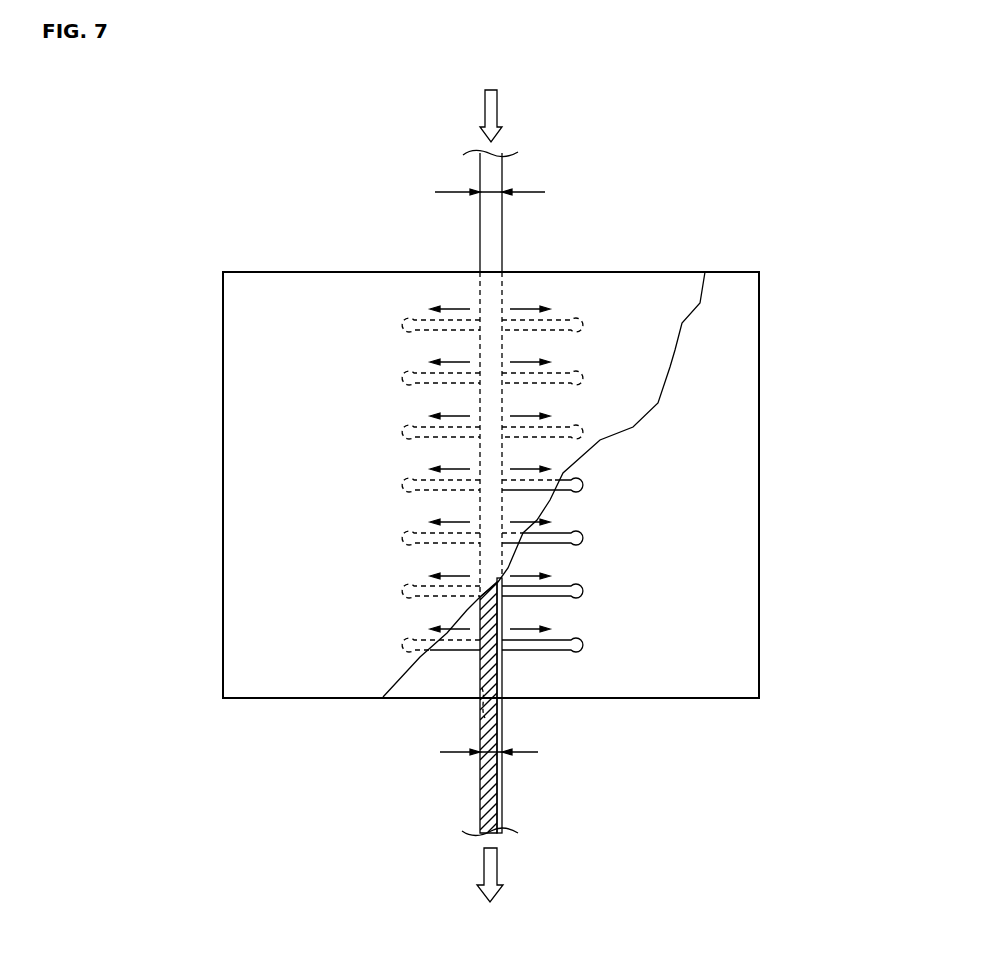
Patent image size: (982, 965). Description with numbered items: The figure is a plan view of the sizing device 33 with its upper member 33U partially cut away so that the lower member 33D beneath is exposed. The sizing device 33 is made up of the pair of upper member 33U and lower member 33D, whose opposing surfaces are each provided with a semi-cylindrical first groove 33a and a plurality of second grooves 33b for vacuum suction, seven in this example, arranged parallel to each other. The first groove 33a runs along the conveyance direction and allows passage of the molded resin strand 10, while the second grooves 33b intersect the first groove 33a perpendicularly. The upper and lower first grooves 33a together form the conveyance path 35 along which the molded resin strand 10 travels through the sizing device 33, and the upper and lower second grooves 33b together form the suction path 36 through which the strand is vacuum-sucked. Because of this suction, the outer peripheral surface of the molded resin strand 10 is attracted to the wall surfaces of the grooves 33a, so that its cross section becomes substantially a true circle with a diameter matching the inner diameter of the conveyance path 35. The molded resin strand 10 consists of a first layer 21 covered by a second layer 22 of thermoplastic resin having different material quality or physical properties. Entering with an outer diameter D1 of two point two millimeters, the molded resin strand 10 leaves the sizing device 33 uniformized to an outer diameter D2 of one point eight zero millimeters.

The sizing device 33 is at (709, 226).
The upper member 33U is at (252, 449).
The lower member 33D is at (722, 478).
The first groove 33a is at (484, 698).
The second grooves 33b is at (541, 594).
The conveyance path 35 is at (480, 452).
The suction path 36 is at (414, 322).
The molded resin strand 10 is at (548, 501).
The first layer 21 is at (495, 808).
The second layer 22 is at (502, 776).
The outer diameter D1 is at (526, 190).
The outer diameter D2 is at (526, 752).